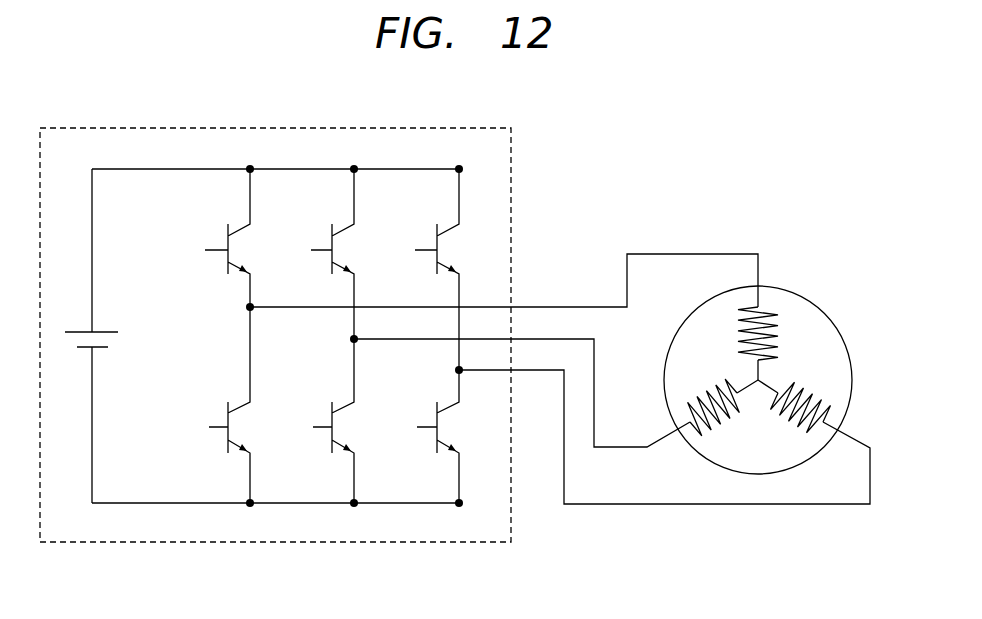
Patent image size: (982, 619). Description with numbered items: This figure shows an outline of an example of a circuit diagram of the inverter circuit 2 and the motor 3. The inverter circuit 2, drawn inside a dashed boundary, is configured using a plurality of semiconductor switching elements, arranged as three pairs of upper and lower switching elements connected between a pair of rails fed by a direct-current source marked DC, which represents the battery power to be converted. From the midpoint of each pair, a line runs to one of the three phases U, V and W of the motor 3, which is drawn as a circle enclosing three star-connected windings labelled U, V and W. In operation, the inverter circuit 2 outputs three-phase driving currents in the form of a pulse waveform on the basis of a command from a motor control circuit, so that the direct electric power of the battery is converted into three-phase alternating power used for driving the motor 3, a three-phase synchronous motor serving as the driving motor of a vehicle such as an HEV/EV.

The inverter circuit 2 is at (170, 128).
The motor 3 is at (837, 322).
The DC power source DC is at (85, 325).
The U-phase winding U is at (761, 317).
The V-phase winding V is at (702, 423).
The W-phase winding W is at (824, 410).